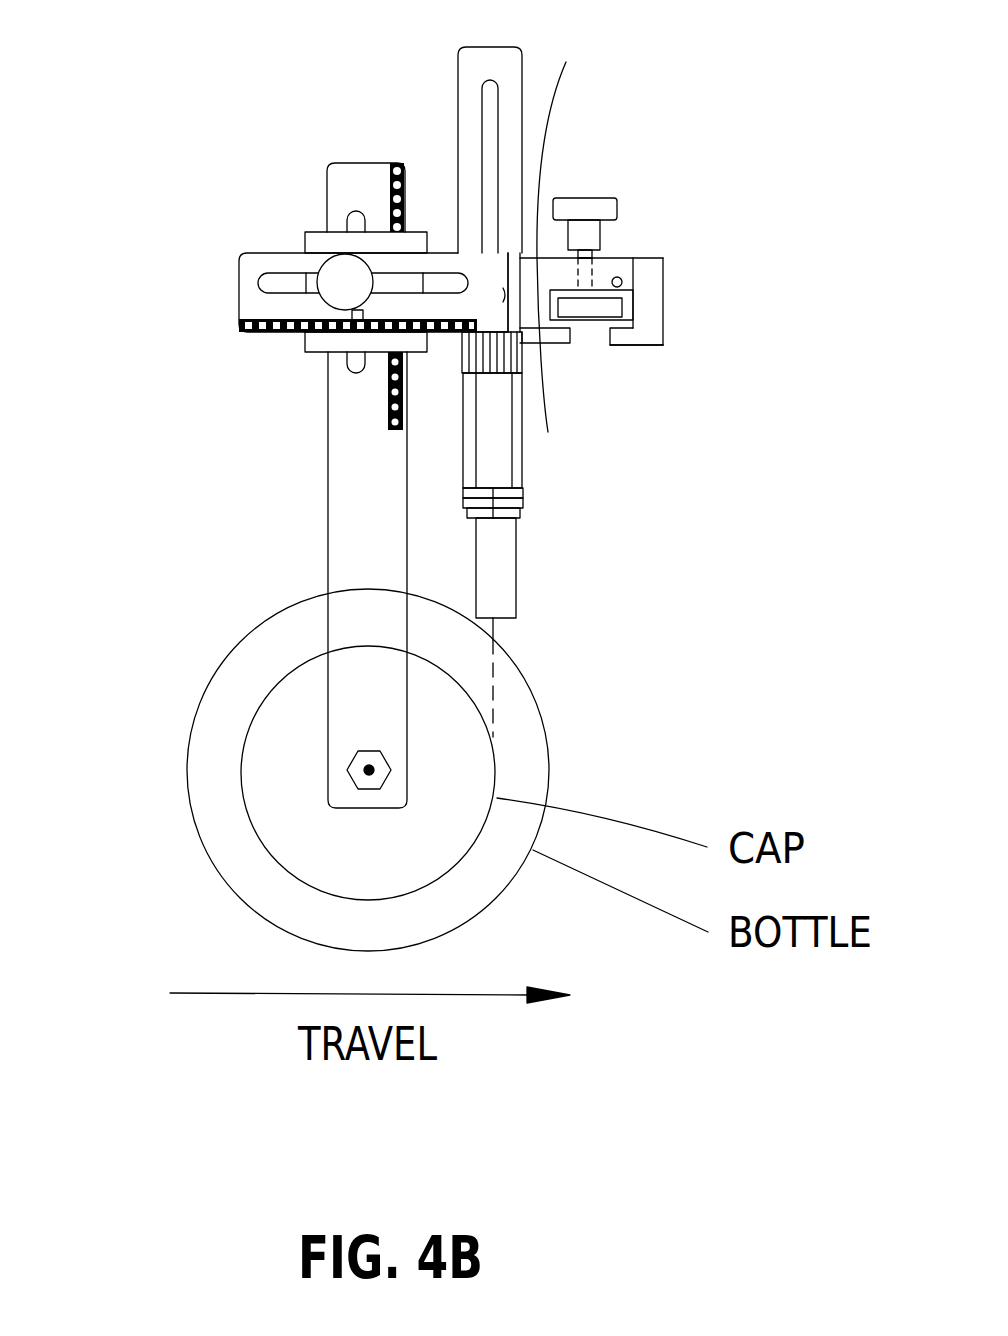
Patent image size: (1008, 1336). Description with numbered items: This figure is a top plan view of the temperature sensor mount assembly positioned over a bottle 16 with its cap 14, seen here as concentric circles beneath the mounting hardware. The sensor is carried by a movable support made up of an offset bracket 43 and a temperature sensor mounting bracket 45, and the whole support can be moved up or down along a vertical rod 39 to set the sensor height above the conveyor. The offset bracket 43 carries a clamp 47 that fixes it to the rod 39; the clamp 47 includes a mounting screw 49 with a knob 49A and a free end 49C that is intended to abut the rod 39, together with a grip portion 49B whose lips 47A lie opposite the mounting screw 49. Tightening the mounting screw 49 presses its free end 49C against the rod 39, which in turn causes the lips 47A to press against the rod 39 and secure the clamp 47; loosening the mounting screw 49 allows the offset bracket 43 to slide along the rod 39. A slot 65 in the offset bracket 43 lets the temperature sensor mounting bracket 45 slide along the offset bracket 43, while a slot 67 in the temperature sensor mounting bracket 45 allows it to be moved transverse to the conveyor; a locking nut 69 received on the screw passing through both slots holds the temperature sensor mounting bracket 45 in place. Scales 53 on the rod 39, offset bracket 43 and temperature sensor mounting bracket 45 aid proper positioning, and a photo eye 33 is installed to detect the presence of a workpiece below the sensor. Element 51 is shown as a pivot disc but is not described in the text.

The cap 14 is at (280, 815).
The bottle 16 is at (185, 747).
The photo eye 33 is at (503, 553).
The rod 39 is at (585, 320).
The offset bracket 43 is at (237, 285).
The temperature sensor mounting bracket 45 is at (328, 497).
The clamp 47 is at (653, 277).
The lips 47A is at (640, 345).
The mounting screw 49 is at (590, 185).
The knob 49A is at (620, 203).
The grip portion 49B is at (585, 219).
The free end 49C is at (593, 292).
The pivot disc 51 is at (345, 287).
The scale 53 is at (398, 162).
The slot 65 is at (280, 278).
The slot 67 is at (347, 212).
The locking nut 69 is at (255, 332).